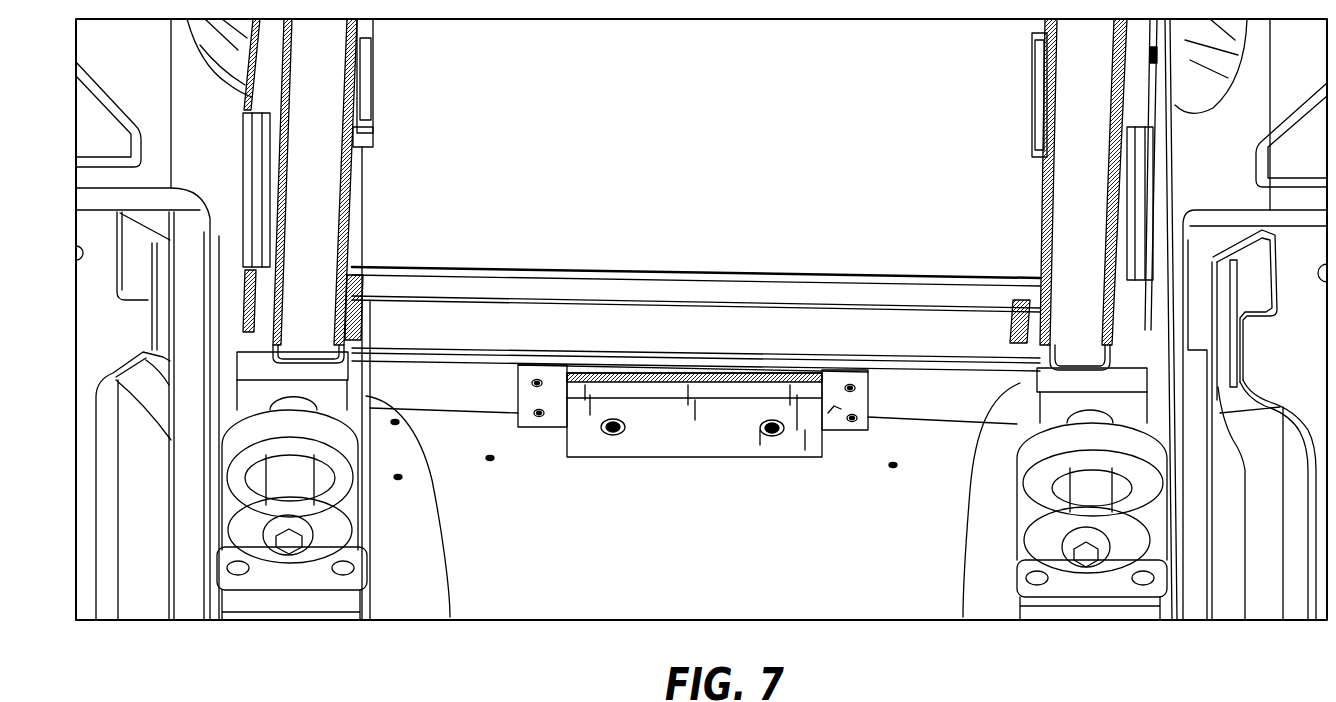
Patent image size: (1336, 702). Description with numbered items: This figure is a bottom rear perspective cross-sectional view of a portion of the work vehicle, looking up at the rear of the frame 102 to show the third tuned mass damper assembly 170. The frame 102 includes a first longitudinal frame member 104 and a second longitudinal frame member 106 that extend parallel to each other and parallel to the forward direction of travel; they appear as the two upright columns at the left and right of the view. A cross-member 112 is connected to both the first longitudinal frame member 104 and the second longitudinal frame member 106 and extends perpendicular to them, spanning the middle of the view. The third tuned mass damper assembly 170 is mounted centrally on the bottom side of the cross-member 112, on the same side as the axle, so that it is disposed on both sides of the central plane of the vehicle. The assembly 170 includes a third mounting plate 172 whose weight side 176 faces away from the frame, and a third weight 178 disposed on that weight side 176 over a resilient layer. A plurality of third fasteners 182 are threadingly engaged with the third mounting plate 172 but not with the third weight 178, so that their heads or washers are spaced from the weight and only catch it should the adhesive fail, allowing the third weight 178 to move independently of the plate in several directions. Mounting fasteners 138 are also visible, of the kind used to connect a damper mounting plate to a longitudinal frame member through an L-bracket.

The frame 102 is at (701, 348).
The first longitudinal frame member 104 is at (452, 619).
The second longitudinal frame member 106 is at (970, 646).
The cross-member 112 is at (448, 322).
The mounting fasteners 138 is at (855, 420).
The third tuned mass damper assembly 170 is at (742, 486).
The third mounting plate 172 is at (832, 380).
The weight side 176 is at (837, 416).
The third weight 178 is at (683, 440).
The third fasteners 182 is at (772, 437).